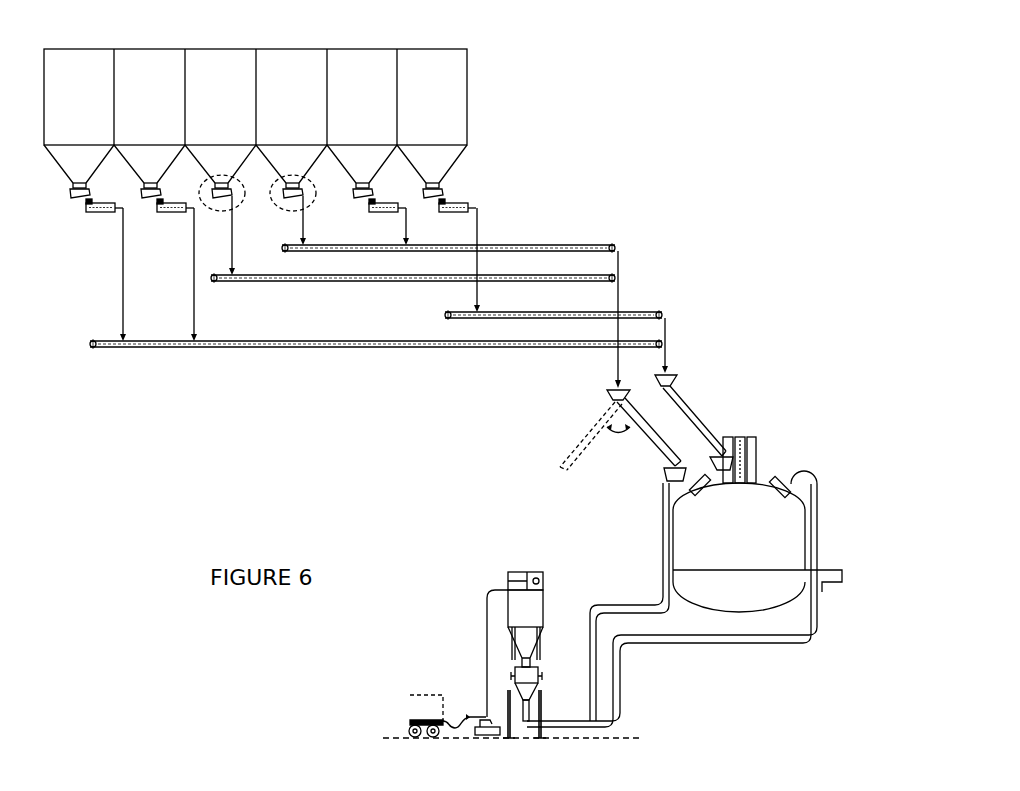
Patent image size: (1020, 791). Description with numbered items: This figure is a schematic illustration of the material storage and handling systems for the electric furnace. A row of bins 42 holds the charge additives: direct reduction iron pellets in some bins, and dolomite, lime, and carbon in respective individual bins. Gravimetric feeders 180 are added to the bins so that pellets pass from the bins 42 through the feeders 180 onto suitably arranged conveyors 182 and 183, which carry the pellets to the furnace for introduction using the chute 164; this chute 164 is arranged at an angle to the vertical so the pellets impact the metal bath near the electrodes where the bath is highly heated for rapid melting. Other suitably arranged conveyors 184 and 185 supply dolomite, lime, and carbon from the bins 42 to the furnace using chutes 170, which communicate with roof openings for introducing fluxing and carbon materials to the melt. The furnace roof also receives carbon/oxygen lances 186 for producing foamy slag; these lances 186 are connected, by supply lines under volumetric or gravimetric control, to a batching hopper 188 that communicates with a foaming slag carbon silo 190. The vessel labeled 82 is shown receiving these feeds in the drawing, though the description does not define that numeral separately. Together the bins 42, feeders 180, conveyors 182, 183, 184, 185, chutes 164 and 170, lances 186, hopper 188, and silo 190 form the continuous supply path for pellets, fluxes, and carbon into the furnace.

The bins 42 is at (446, 108).
The gravimetric feeders 180 is at (95, 214).
The conveyor 182 is at (358, 280).
The conveyor 183 is at (633, 313).
The conveyor 184 is at (493, 343).
The conveyor 185 is at (517, 247).
The chute 164 is at (683, 403).
The chute 170 is at (647, 440).
The carbon/oxygen lances 186 is at (695, 478).
The mixing vessel 82 is at (847, 583).
The batching hopper 188 is at (517, 675).
The foaming slag carbon silo 190 is at (537, 602).